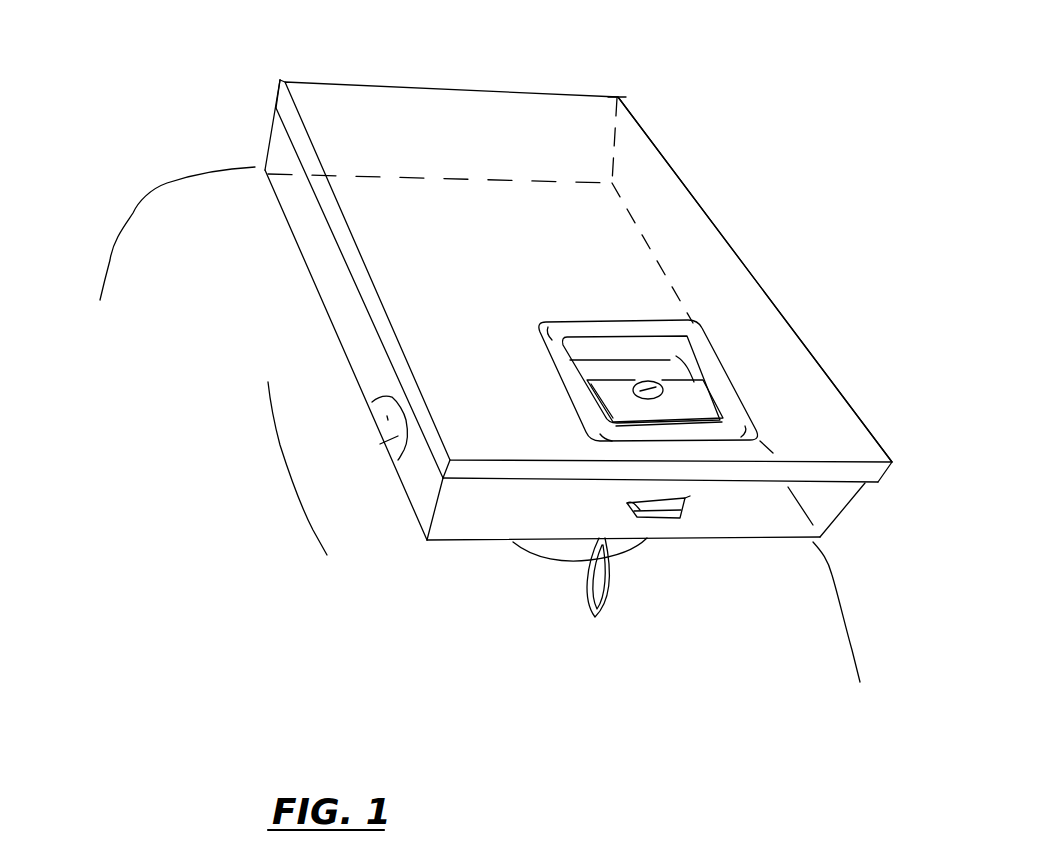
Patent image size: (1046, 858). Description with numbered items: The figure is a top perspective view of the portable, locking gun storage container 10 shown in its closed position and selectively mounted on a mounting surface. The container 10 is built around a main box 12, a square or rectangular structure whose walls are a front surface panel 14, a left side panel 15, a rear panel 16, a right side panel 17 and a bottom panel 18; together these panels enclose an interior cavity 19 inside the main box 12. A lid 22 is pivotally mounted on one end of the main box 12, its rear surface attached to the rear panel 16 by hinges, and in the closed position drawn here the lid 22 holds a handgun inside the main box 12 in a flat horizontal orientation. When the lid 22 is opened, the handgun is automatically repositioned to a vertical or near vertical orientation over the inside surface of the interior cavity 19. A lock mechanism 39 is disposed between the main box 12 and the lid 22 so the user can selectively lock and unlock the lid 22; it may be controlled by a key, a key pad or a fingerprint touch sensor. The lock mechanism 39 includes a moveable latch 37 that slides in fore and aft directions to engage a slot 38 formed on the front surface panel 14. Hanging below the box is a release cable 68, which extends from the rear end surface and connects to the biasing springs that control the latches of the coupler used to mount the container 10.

The portable, locking gun storage container 10 is at (288, 60).
The main box 12 is at (423, 518).
The front surface panel 14 is at (836, 512).
The left side panel 15 is at (303, 260).
The rear panel 16 is at (276, 110).
The right side panel 17 is at (692, 190).
The bottom panel 18 is at (385, 418).
The interior cavity 19 is at (382, 444).
The lid 22 is at (620, 88).
The moveable latch 37 is at (672, 520).
The slot 38 is at (625, 512).
The lock mechanism 39 is at (604, 342).
The release cable 68 is at (603, 608).